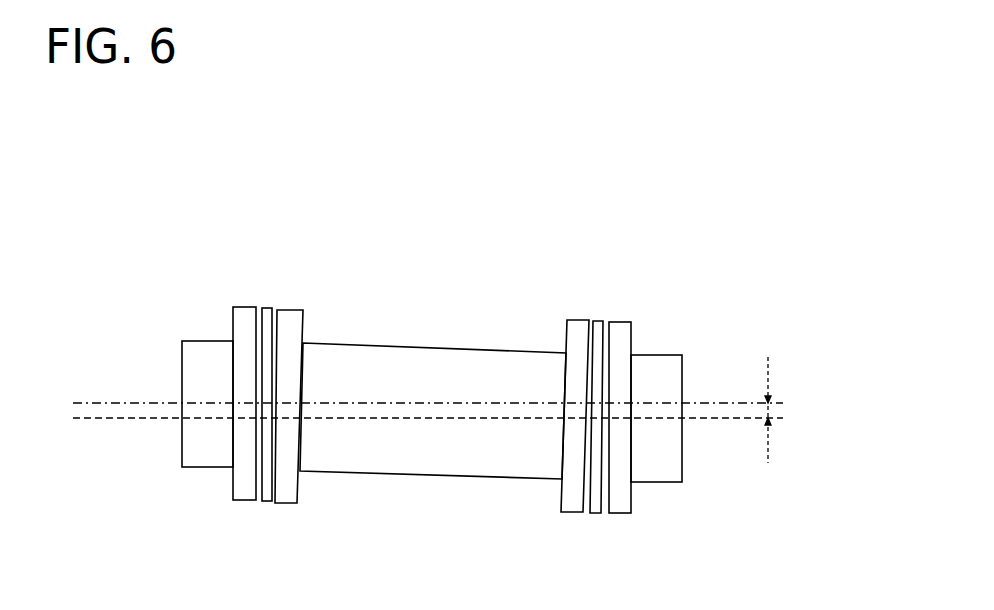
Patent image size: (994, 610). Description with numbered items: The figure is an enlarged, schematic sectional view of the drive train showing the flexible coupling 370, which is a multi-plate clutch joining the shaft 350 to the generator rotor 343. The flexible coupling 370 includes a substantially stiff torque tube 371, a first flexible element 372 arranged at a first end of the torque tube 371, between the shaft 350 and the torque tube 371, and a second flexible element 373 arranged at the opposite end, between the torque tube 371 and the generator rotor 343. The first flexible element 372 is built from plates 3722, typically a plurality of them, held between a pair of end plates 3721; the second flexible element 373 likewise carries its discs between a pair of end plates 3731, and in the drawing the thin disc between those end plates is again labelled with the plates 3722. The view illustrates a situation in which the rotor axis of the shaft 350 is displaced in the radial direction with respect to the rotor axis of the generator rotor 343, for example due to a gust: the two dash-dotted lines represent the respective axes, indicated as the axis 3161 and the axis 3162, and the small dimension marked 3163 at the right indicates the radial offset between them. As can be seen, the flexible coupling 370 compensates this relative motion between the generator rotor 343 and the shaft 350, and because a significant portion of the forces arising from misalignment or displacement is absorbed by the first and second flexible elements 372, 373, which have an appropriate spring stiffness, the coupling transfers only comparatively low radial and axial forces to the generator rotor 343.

The flexible coupling 370 is at (445, 204).
The torque tube 371 is at (452, 367).
The first flexible element 372 is at (279, 292).
The second flexible element 373 is at (588, 292).
The end plates 3721 is at (243, 328).
The plates 3722 is at (268, 508).
The end plates 3731 is at (575, 342).
The shaft 350 is at (202, 458).
The generator rotor 343 is at (668, 462).
The first axis 3161 is at (141, 402).
The second axis 3162 is at (93, 420).
The axis offset 3163 is at (768, 411).